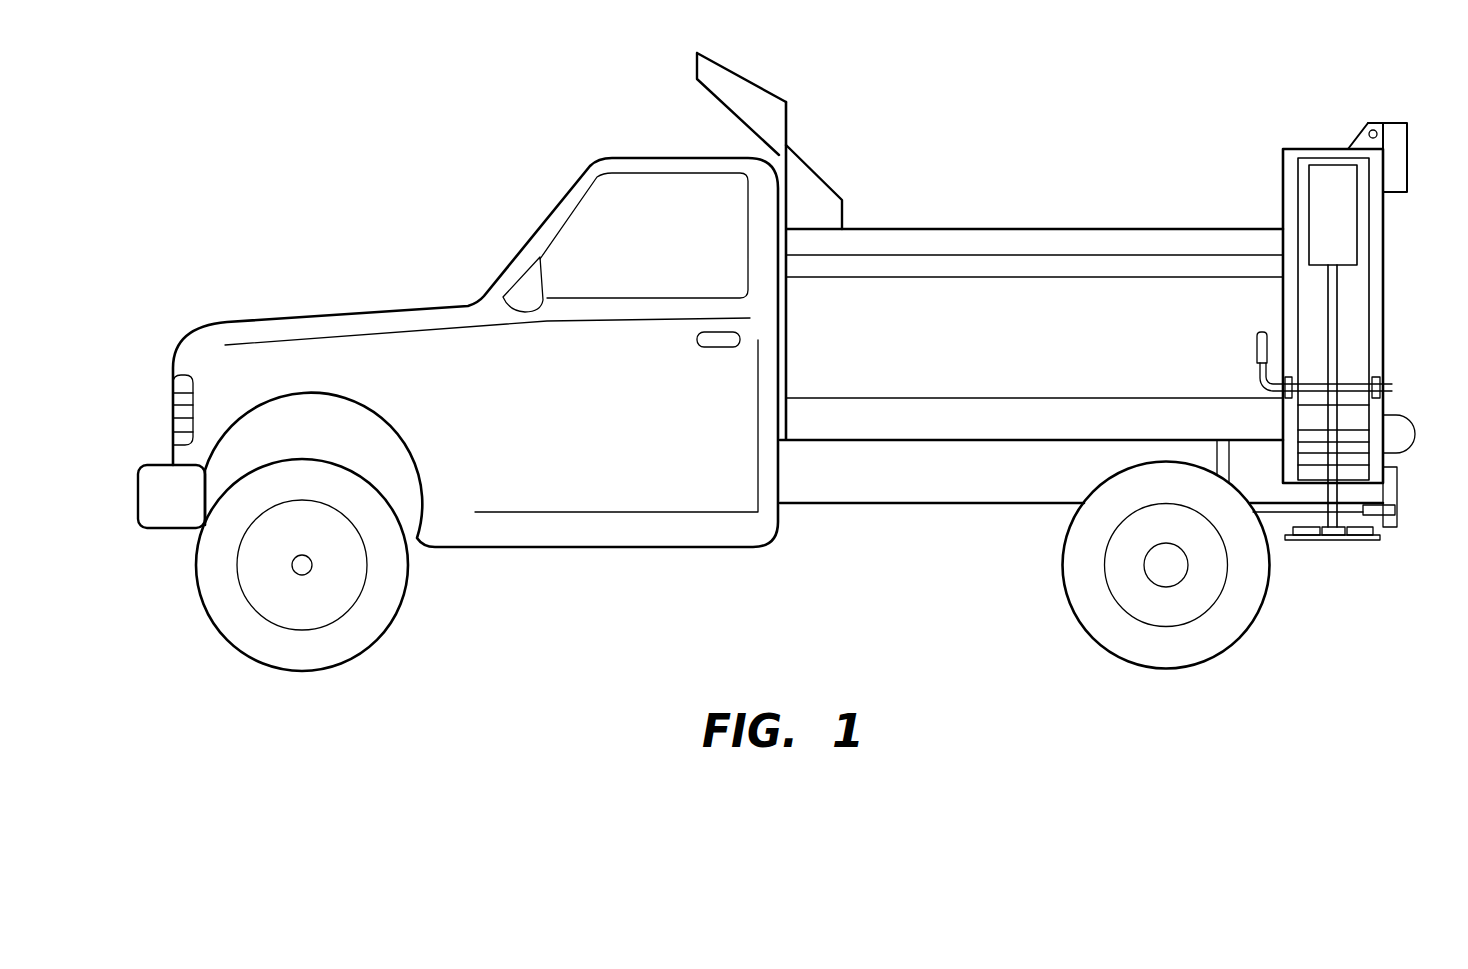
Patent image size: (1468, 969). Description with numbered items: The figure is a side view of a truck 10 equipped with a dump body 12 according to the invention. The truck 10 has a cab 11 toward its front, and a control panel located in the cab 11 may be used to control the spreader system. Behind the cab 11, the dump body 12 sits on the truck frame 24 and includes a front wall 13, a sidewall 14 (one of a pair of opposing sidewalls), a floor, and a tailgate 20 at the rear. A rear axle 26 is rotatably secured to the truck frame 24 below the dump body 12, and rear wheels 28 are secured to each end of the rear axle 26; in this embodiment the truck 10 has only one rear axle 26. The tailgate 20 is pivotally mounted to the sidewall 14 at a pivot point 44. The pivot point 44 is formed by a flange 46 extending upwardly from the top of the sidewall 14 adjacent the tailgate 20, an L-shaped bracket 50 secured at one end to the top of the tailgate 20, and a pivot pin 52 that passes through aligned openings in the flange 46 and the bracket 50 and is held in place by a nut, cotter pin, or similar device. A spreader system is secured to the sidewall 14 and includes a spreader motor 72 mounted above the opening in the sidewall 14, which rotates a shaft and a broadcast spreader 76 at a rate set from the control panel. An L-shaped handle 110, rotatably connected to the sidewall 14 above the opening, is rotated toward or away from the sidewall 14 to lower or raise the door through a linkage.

The truck 10 is at (428, 215).
The cab 11 is at (591, 414).
The dump body 12 is at (960, 198).
The front wall 13 is at (784, 198).
The sidewall 14 is at (1059, 349).
The tailgate 20 is at (1378, 264).
The truck frame 24 is at (900, 480).
The rear axle 26 is at (1163, 567).
The rear wheels 28 is at (1100, 617).
The pivot point 44 is at (1385, 108).
The flange 46 is at (1362, 145).
The L-shaped bracket 50 is at (1399, 172).
The pivot pin 52 is at (1378, 134).
The spreader motor 72 is at (1342, 208).
The broadcast spreader 76 is at (1350, 538).
The L-shaped handle 110 is at (1258, 372).